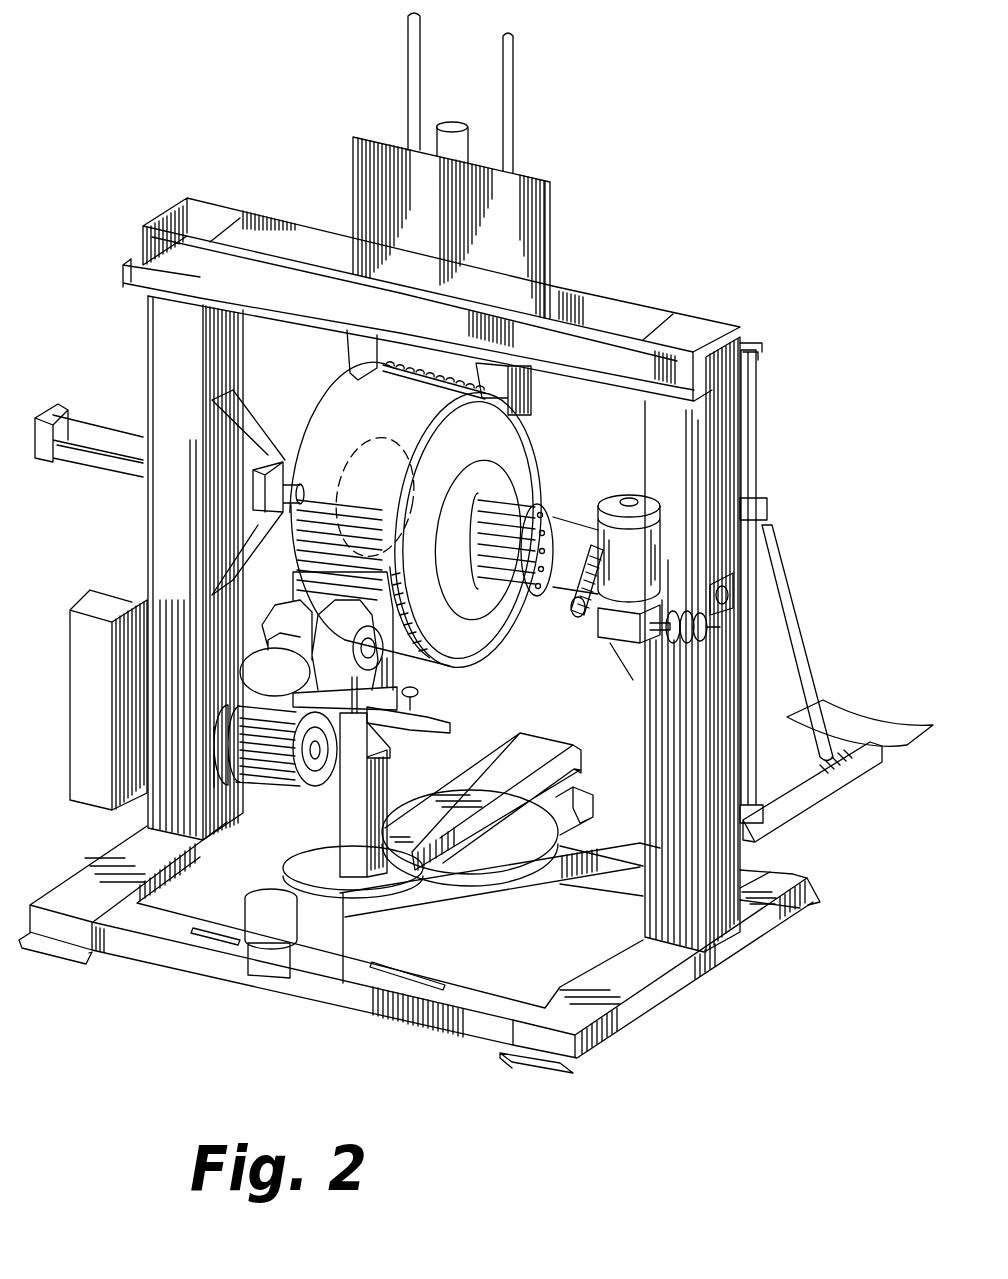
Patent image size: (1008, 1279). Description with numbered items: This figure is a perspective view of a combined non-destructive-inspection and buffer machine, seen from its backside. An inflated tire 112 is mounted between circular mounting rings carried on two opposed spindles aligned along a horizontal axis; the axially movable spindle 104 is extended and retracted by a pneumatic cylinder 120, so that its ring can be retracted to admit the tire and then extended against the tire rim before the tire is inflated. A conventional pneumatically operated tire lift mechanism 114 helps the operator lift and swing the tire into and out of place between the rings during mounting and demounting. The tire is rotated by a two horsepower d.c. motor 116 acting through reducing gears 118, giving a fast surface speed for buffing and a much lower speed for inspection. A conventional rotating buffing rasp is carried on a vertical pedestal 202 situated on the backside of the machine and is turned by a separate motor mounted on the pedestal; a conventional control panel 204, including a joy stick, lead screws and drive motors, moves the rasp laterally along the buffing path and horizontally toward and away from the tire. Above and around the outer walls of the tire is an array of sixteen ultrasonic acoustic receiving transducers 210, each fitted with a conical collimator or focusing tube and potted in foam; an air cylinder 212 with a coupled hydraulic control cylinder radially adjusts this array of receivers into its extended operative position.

The axially movable spindle 104 is at (240, 503).
The inflated tire 112 is at (413, 430).
The tire lift mechanism 114 is at (872, 768).
The d.c. motor 116 is at (640, 493).
The reducing gears 118 is at (607, 648).
The pneumatic cylinder 120 is at (80, 425).
The vertical pedestal 202 is at (335, 822).
The control panel 204 is at (360, 625).
The ultrasonic acoustic receiving transducers 210 is at (390, 383).
The air cylinder 212 is at (472, 136).